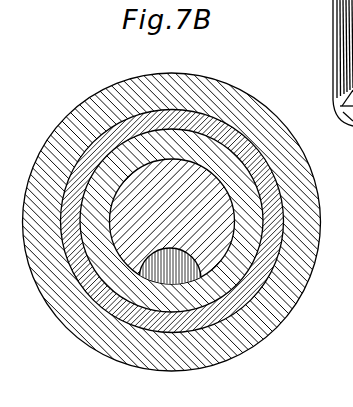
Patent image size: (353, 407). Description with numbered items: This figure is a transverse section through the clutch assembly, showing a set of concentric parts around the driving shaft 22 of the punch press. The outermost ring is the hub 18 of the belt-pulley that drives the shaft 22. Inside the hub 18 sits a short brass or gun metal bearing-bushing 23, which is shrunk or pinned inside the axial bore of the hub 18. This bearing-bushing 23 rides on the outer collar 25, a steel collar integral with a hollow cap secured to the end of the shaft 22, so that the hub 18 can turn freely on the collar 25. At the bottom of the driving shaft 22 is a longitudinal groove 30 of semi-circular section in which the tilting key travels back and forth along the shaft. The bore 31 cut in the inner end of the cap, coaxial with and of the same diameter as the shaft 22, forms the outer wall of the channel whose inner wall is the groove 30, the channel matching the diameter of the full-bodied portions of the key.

The hub 18 is at (311, 176).
The bearing-bushing 23 is at (92, 148).
The outer collar 25 is at (137, 293).
The driving shaft 22 is at (180, 178).
The longitudinal groove 30 is at (197, 257).
The bore 31 is at (178, 285).